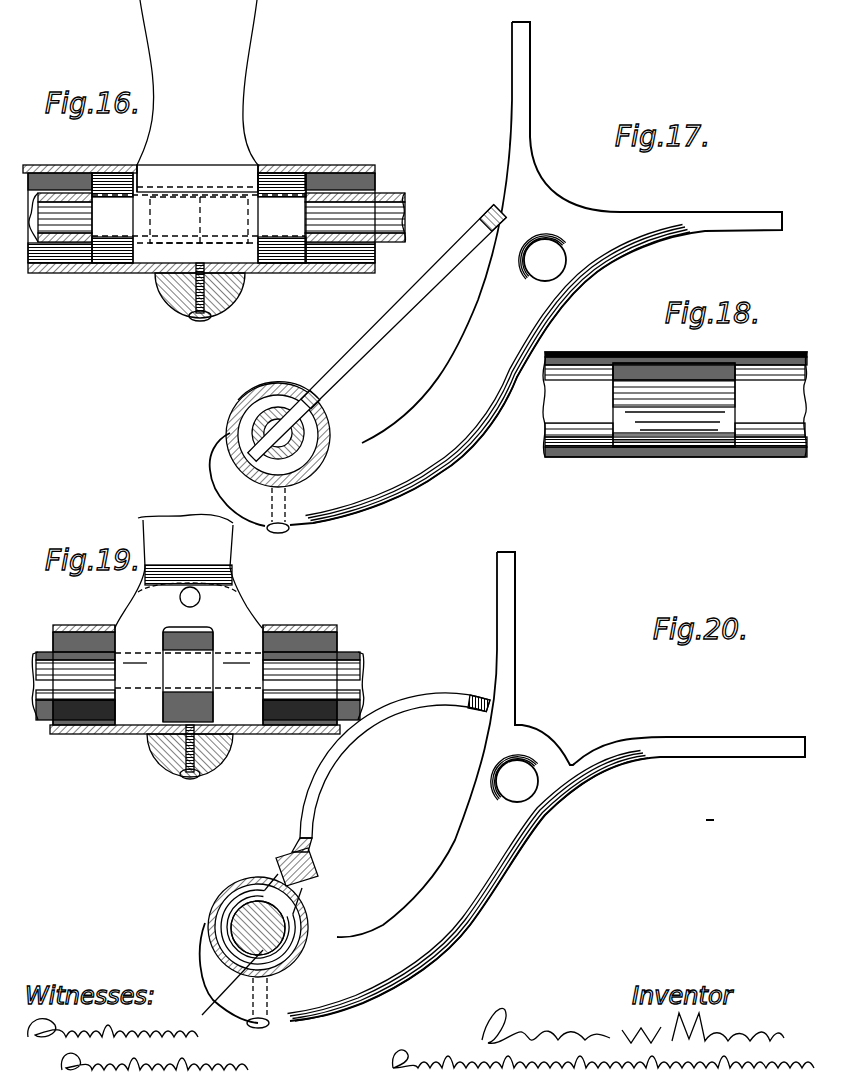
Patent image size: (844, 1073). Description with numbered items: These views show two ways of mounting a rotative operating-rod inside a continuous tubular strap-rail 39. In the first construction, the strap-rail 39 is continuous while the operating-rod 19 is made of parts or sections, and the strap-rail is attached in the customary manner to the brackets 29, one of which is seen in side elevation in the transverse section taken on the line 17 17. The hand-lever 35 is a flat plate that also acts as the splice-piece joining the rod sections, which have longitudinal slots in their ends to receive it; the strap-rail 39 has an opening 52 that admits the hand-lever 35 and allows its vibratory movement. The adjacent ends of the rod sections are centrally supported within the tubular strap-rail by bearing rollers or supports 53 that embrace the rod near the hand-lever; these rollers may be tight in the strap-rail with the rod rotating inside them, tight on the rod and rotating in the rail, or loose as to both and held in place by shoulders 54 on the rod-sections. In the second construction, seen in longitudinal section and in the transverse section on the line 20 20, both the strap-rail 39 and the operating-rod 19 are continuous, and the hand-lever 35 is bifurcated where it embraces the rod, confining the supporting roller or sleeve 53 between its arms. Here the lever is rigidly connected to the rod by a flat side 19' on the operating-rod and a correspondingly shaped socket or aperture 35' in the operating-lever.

In FIG. 16, the section line 17 17 is at (259, 162).
In FIG. 16, the operating-rod 19 is at (233, 215).
In FIG. 17, the operating-rod 19 is at (312, 433).
In FIG. 19, the operating-rod 19 is at (213, 686).
In FIG. 20, the operating-rod 19 is at (296, 922).
In FIG. 20, the flat side 19' is at (207, 935).
In FIG. 19, the section line 20 20 is at (263, 625).
In FIG. 16, the bracket 29 is at (168, 298).
In FIG. 17, the bracket 29 is at (496, 277).
In FIG. 19, the bracket 29 is at (190, 752).
In FIG. 20, the bracket 29 is at (502, 790).
In FIG. 16, the hand-lever 35 is at (197, 96).
In FIG. 17, the hand-lever 35 is at (377, 333).
In FIG. 19, the hand-lever 35 is at (188, 571).
In FIG. 20, the hand-lever 35 is at (377, 803).
In FIG. 20, the socket or aperture 35' is at (231, 993).
In FIG. 16, the strap-rail 39 is at (358, 171).
In FIG. 17, the strap-rail 39 is at (228, 417).
In FIG. 18, the strap-rail 39 is at (675, 404).
In FIG. 20, the strap-rail 39 is at (210, 906).
In FIG. 17, the opening 52 is at (285, 386).
In FIG. 18, the opening 52 is at (630, 443).
In FIG. 19, the opening 52 is at (266, 632).
In FIG. 16, the bearing rollers or supports 53 is at (199, 218).
In FIG. 19, the bearing rollers or supports 53 is at (188, 674).
In FIG. 16, the shoulders 54 is at (315, 173).